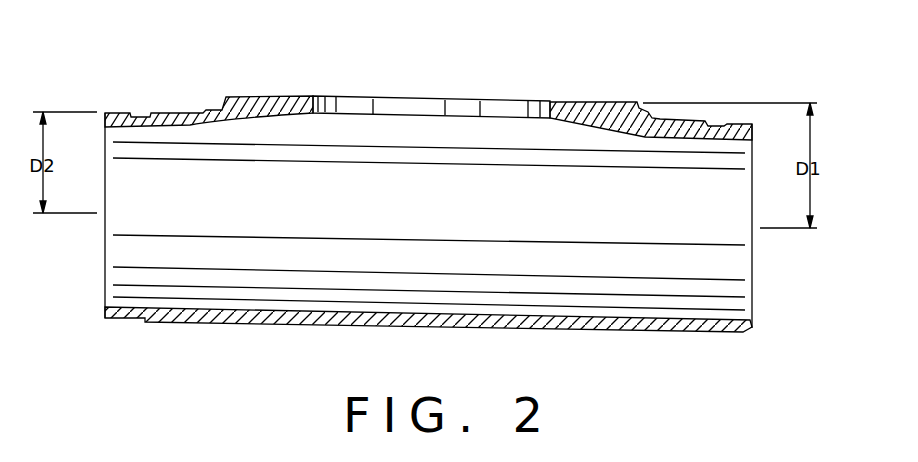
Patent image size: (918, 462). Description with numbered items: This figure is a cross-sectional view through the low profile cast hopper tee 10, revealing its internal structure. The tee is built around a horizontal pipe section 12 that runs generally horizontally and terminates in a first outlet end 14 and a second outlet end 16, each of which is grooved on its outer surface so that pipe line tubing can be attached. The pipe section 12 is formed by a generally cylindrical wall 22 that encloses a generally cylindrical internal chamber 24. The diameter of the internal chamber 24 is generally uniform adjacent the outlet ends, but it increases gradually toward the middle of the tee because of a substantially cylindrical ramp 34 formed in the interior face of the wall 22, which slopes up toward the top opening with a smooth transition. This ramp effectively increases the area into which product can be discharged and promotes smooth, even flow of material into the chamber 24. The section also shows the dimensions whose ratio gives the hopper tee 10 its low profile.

The cast hopper tee 10 is at (430, 195).
The horizontal pipe section 12 is at (677, 122).
The first outlet end 14 is at (751, 289).
The second outlet end 16 is at (97, 278).
The cylindrical wall 22 is at (318, 322).
The internal chamber 24 is at (408, 218).
The cylindrical ramp 34 is at (265, 118).